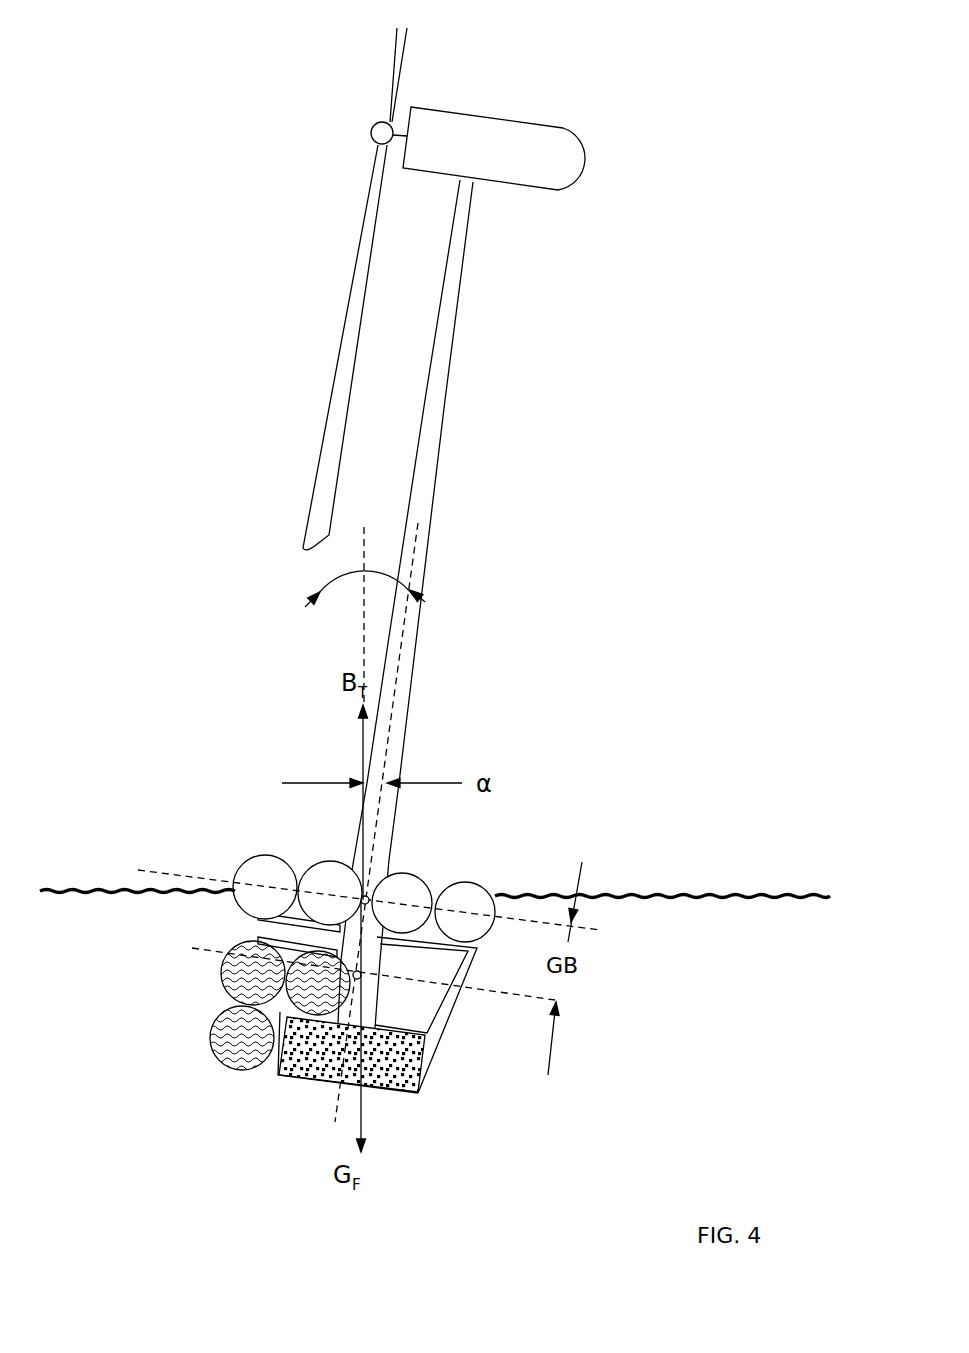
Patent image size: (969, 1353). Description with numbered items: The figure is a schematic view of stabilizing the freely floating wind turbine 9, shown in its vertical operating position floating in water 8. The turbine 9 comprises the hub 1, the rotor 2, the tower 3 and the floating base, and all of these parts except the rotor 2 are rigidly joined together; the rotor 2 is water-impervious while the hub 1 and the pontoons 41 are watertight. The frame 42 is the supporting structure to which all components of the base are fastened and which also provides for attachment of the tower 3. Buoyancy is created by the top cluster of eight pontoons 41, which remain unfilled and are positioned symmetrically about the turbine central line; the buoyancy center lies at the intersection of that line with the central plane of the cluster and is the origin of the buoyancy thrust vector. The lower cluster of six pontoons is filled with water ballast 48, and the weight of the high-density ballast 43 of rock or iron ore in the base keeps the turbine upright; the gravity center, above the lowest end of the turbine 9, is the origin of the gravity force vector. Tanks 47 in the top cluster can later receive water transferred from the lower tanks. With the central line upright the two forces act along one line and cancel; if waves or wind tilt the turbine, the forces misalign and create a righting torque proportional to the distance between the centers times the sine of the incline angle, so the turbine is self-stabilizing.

The hub 1 is at (570, 157).
The rotor 2 is at (365, 243).
The tower 3 is at (450, 425).
The water 8 is at (725, 898).
The turbine 9 is at (160, 434).
The pontoons 41 is at (253, 855).
The frame 42 is at (453, 1013).
The ballast 43 is at (407, 1092).
The tanks 47 is at (340, 883).
The water ballast 48 is at (304, 989).